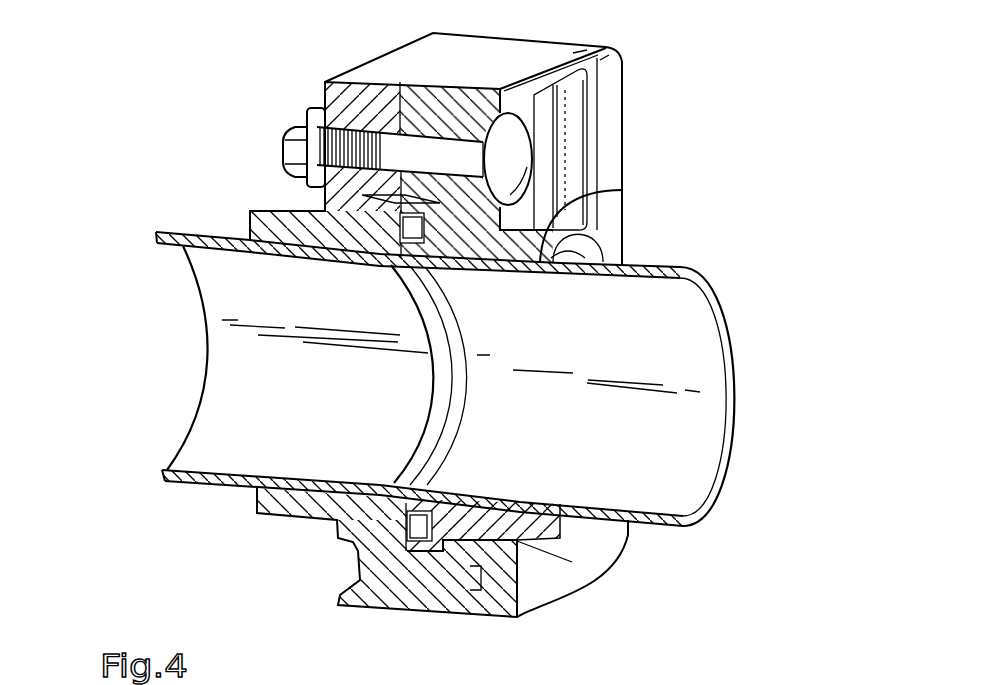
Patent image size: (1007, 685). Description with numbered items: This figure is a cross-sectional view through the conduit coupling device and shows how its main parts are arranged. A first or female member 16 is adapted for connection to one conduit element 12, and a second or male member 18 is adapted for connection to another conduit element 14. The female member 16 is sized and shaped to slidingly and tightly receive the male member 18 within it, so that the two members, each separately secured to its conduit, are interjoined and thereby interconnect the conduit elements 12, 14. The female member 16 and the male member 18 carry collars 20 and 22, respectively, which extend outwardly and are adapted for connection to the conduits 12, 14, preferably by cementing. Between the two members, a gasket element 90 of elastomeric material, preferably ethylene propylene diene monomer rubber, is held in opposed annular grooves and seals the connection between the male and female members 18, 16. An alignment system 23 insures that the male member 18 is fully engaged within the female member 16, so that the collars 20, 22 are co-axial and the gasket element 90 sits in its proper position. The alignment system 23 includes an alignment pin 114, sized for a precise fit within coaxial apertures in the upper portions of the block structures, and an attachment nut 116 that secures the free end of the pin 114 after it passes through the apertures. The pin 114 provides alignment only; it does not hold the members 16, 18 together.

The conduit element 12 is at (207, 425).
The conduit element 14 is at (670, 428).
The first or female member 16 is at (338, 92).
The second or male member 18 is at (557, 153).
The collar 20 is at (240, 262).
The collar 22 is at (623, 190).
The alignment system 23 is at (522, 146).
The gasket element 90 is at (372, 553).
The alignment pin 114 is at (465, 147).
The attachment nut 116 is at (282, 138).